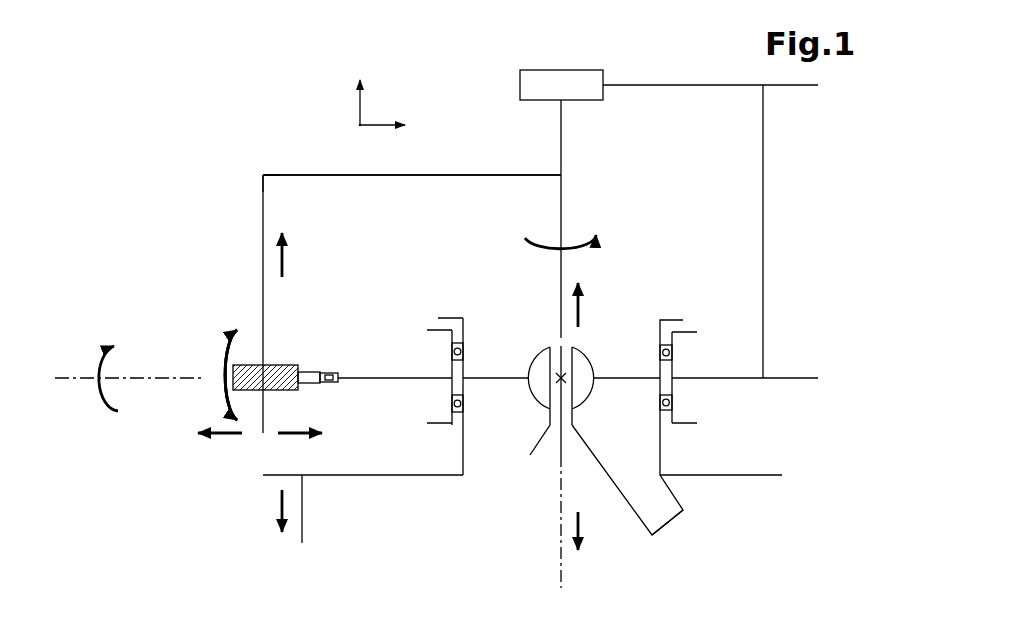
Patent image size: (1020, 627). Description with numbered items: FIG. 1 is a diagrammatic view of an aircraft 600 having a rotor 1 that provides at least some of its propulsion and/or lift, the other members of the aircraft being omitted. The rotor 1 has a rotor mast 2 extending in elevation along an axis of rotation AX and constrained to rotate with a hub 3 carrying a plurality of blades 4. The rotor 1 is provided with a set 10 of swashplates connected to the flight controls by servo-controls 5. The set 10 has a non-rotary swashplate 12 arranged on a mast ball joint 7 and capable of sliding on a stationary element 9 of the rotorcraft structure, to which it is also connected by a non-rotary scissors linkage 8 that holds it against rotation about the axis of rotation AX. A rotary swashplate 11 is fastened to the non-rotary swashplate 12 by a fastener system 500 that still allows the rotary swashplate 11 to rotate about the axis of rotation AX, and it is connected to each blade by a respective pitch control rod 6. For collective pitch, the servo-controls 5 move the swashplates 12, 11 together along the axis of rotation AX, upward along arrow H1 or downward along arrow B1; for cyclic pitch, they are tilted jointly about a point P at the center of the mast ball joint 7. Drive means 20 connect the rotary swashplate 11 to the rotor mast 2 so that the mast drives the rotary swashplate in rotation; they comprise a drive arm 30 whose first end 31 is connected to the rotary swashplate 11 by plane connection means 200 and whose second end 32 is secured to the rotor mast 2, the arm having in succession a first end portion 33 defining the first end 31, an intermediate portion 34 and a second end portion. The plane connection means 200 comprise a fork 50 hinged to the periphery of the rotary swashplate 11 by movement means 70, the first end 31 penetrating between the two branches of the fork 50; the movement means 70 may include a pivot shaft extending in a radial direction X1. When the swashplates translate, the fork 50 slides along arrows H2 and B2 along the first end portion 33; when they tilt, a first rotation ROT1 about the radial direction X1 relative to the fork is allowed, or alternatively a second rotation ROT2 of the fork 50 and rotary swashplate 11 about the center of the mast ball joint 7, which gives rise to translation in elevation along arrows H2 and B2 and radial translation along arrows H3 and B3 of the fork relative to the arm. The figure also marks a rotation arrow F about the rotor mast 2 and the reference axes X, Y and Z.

The aircraft 600 is at (166, 85).
The rotor 1 is at (266, 122).
The drive means 20 is at (205, 196).
The drive arm 30 is at (263, 213).
The intermediate portion 34 is at (284, 191).
The second end 32 is at (478, 181).
The first end 31 is at (238, 300).
The first end portion 33 is at (231, 375).
The plane connection means 200 is at (181, 322).
The fork 50 is at (277, 357).
The movement means 70 is at (329, 360).
The rotary swashplate 11 is at (393, 378).
The set of swashplates 10 is at (222, 493).
The servo-controls 5 is at (305, 503).
The non-rotary swashplate 12 is at (408, 475).
The hub 3 is at (520, 82).
The blades 4 is at (688, 84).
The pitch control rod 6 is at (763, 187).
The fastener system 500 is at (665, 320).
The mast ball joint 7 is at (527, 388).
The point P is at (570, 372).
The rotor mast 2 is at (561, 453).
The axis of rotation AX is at (561, 490).
The stationary element 9 is at (607, 473).
The non-rotary scissors linkage 8 is at (694, 514).
The radial direction X1 is at (173, 380).
The first rotation ROT1 is at (85, 399).
The second rotation ROT2 is at (192, 375).
The arrow H1 is at (598, 305).
The arrow H2 is at (301, 255).
The arrow H3 is at (220, 450).
The arrow B1 is at (597, 531).
The arrow B2 is at (263, 511).
The arrow B3 is at (300, 450).
The rotation F is at (550, 248).
The X axis X is at (396, 125).
The Y axis Y is at (346, 126).
The Z axis Z is at (359, 83).